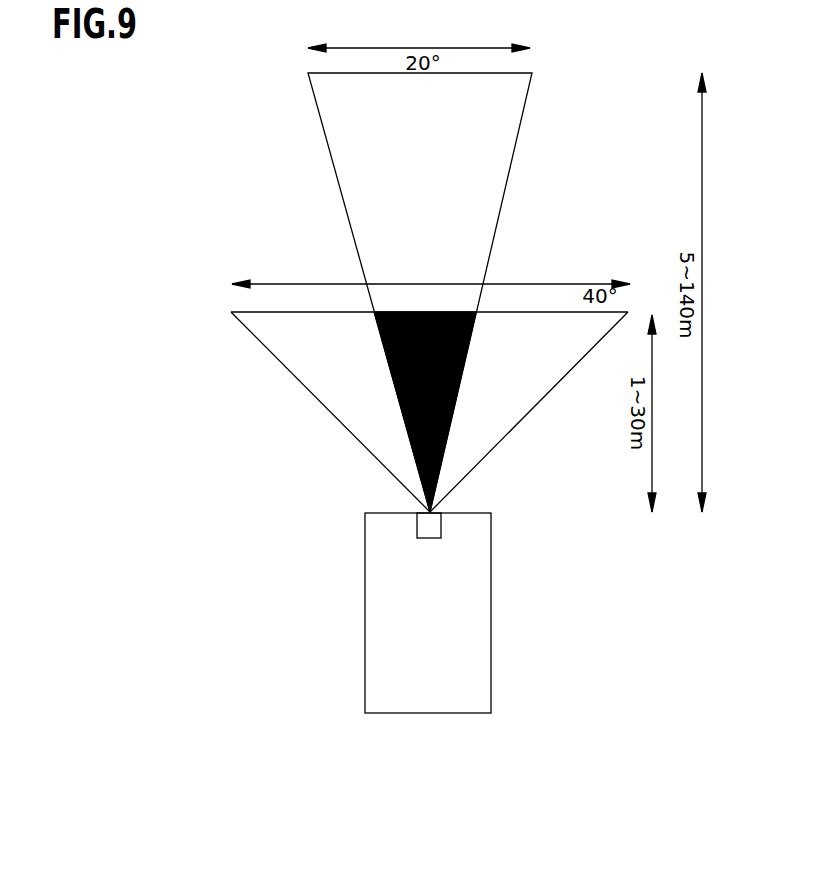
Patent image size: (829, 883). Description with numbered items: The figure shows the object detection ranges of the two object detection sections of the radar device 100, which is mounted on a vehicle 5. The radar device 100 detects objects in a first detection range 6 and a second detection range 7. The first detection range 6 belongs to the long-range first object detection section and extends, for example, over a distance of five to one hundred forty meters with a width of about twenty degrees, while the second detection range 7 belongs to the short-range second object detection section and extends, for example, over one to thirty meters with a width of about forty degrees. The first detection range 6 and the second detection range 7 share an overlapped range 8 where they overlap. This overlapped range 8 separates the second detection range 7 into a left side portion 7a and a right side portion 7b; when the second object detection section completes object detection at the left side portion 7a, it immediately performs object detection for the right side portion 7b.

The vehicle 5 is at (491, 635).
The first detection range 6 is at (520, 126).
The second detection range 7 is at (429, 412).
The left side portion 7a is at (331, 384).
The right side portion 7b is at (567, 350).
The overlapped range 8 is at (476, 312).
The radar device 100 is at (427, 538).